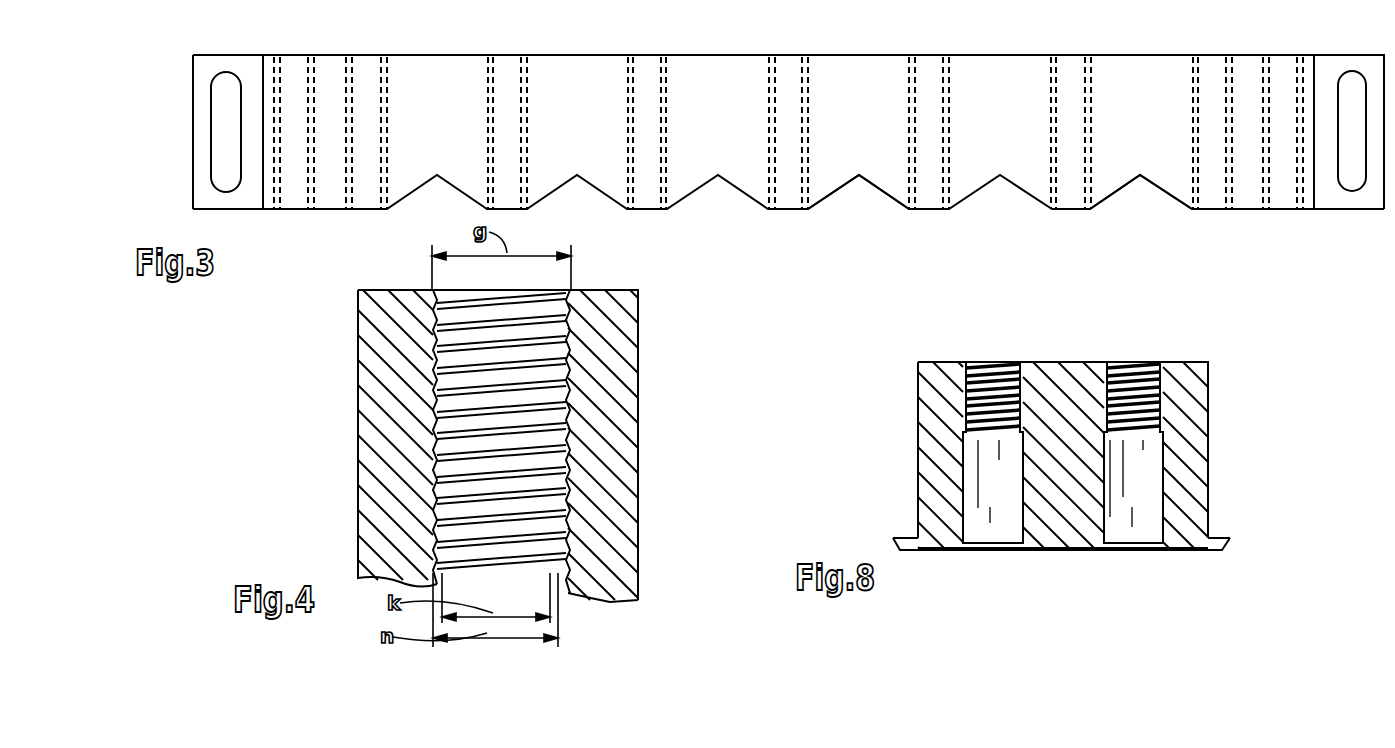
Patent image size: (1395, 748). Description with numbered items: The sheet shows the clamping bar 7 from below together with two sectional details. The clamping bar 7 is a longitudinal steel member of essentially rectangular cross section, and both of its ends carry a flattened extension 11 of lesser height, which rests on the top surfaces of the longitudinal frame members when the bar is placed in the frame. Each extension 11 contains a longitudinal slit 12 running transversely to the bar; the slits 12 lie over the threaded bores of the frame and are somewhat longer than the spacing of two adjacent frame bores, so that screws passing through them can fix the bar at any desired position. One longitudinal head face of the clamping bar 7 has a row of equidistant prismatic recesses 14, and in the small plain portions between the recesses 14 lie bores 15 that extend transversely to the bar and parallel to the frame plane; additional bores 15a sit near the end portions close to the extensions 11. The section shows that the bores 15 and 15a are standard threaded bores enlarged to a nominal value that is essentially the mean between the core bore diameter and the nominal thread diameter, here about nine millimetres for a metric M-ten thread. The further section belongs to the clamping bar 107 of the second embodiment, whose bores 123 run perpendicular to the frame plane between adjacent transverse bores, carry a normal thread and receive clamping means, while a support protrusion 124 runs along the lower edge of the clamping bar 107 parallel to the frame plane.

In FIG. 3, the clamping bar 7 is at (857, 73).
In FIG. 4, the clamping bar 7 is at (618, 373).
In FIG. 3, the flattened extension 11 is at (203, 62).
In FIG. 3, the longitudinal slit 12 is at (222, 180).
In FIG. 3, the prismatic recess 14 is at (858, 176).
In FIG. 3, the bore 15 is at (367, 70).
In FIG. 4, the bore 15 is at (526, 350).
In FIG. 3, the additional bore 15a is at (295, 80).
In FIG. 8, the clamping bar 107 is at (1193, 443).
In FIG. 8, the bore 123 is at (1130, 530).
In FIG. 8, the support protrusion 124 is at (1221, 543).